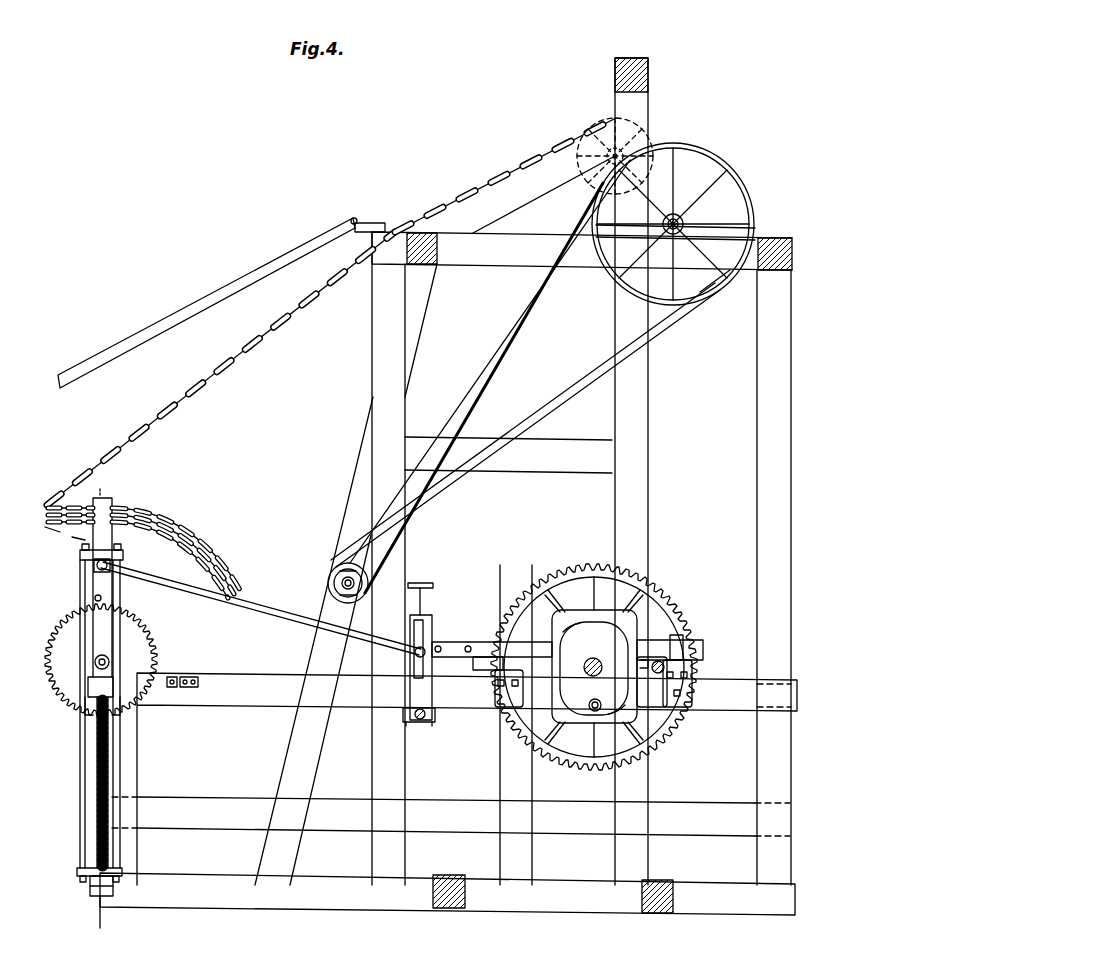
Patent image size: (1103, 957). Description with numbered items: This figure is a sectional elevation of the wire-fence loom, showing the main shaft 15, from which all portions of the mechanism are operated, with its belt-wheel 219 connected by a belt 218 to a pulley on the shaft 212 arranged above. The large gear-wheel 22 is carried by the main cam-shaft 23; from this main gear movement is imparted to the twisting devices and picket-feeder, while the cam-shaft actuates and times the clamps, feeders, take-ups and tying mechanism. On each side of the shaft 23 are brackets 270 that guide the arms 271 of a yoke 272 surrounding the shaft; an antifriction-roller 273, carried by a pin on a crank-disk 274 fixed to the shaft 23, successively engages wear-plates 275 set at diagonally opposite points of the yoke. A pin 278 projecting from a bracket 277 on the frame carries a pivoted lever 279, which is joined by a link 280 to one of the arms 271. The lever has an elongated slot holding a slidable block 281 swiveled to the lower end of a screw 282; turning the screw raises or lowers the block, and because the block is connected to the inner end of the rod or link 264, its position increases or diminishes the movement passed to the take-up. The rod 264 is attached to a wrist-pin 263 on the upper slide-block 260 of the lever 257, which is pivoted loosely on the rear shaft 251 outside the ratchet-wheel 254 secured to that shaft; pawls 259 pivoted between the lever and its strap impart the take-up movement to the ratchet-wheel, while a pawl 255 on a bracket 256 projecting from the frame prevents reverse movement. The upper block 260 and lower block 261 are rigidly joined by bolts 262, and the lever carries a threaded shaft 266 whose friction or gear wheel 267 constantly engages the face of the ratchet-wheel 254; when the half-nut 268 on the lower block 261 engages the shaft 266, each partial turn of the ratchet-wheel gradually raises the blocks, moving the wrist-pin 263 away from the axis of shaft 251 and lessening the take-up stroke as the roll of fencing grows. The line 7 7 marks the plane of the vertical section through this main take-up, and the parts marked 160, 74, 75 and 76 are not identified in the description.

The inclined conveyor chain 160 is at (648, 141).
The main shaft 15 is at (686, 224).
The belt-wheel 219 is at (688, 303).
The belt 218 is at (453, 490).
The shaft 212 is at (336, 574).
The rod or link 264 is at (290, 598).
The screw 282 is at (430, 609).
The link 280 is at (452, 644).
The slidable block 281 is at (426, 658).
The lever 279 is at (413, 682).
The bracket 277 is at (405, 716).
The pin 278 is at (423, 720).
The arms of yoke 271 is at (486, 662).
The brackets 270 is at (496, 700).
The wear-plates 275 is at (562, 628).
The yoke 272 is at (593, 610).
The crank-disk 274 is at (620, 642).
The main cam-shaft 23 is at (586, 655).
The bracket 75 is at (653, 656).
The lug 76 is at (640, 652).
The antifriction-roller 273 is at (605, 695).
The shaft 74 is at (657, 674).
The main gear-wheel 22 is at (668, 734).
The section line 7 is at (99, 708).
The lever 257 is at (108, 506).
The upper slide-block 260 is at (112, 561).
The wrist-pin 263 is at (86, 558).
The pawls 259 is at (95, 599).
The ratchet-wheel 254 is at (130, 642).
The shaft 251 is at (95, 664).
The pawl 255 is at (170, 676).
The friction or gear wheel 267 is at (88, 692).
The bracket 256 is at (186, 690).
The bolts 262 is at (83, 770).
The threaded shaft 266 is at (97, 808).
The half-nut 268 is at (86, 877).
The lower slide-block 261 is at (114, 886).